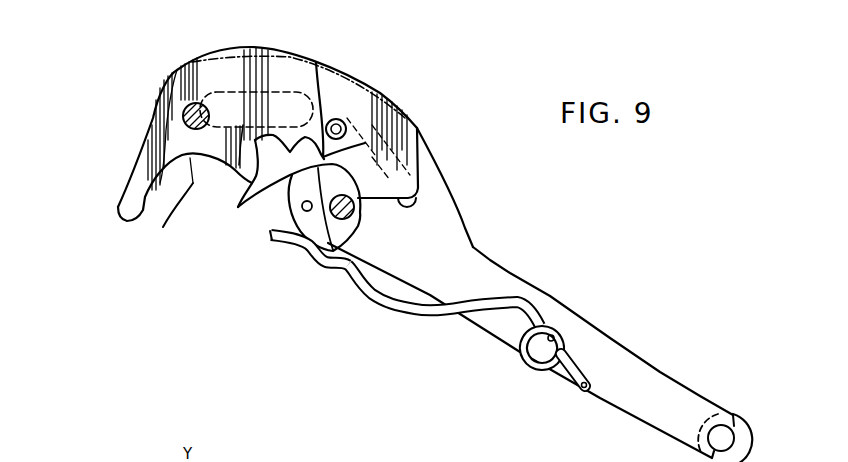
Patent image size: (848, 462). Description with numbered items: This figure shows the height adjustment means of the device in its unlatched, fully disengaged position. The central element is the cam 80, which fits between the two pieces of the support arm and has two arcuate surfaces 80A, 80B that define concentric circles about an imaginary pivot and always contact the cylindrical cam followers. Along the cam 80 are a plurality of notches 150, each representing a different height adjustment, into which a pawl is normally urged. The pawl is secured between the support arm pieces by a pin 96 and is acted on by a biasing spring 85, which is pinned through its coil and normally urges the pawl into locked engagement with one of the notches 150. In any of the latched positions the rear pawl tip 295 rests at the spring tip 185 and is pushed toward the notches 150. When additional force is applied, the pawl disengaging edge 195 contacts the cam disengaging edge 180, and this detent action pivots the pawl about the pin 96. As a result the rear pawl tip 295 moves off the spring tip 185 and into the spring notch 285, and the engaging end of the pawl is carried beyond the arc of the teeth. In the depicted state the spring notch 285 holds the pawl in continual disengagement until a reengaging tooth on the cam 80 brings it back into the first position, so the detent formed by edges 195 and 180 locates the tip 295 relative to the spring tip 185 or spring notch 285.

The cam 80 is at (123, 197).
The arcuate surface 80A is at (162, 221).
The arcuate surface 80B is at (390, 100).
The notches 150 is at (315, 62).
The cam disengaging edge 180 is at (362, 196).
The pawl disengaging edge 195 is at (239, 206).
The pin 96 is at (290, 213).
The rear pawl tip 295 is at (343, 243).
The biasing spring 85 is at (547, 303).
The spring tip 185 is at (396, 309).
The spring notch 285 is at (326, 268).